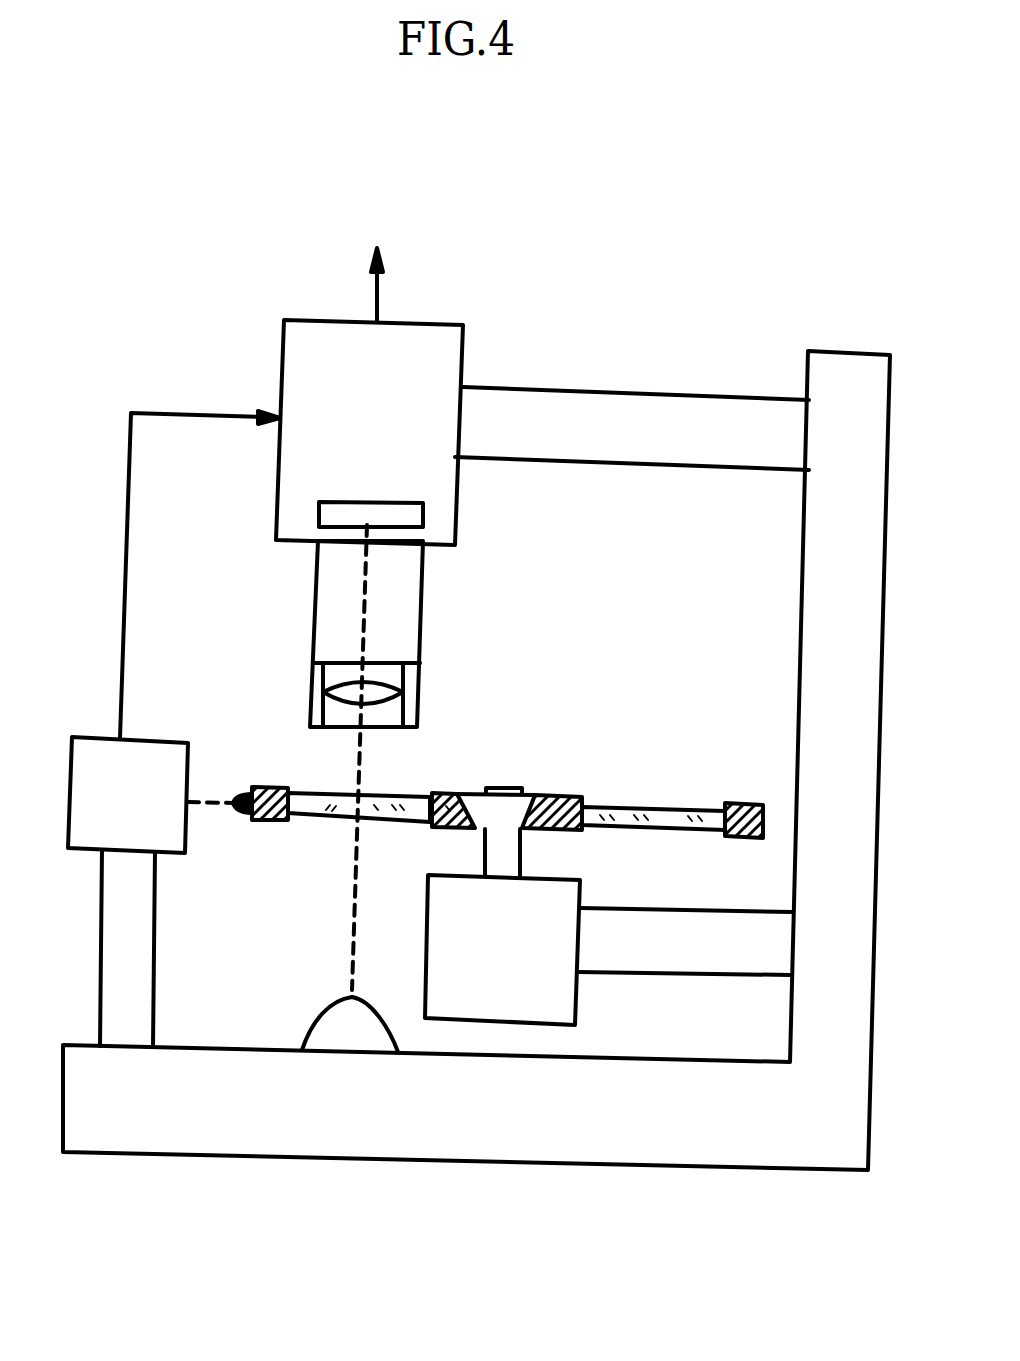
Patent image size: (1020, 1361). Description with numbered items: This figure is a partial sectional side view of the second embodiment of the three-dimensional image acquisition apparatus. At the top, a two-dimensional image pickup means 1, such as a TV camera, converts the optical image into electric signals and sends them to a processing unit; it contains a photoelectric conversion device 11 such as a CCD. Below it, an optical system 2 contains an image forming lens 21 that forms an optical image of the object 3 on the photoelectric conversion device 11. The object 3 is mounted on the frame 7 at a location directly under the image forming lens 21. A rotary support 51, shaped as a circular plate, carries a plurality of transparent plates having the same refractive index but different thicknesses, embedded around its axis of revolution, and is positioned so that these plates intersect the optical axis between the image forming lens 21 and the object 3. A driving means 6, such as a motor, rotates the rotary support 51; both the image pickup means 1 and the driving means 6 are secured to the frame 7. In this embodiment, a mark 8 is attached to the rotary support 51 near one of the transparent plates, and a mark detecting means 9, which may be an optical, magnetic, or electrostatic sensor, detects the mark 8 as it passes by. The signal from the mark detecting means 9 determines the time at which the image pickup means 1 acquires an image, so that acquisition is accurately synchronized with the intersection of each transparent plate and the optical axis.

The two-dimensional image pickup means 1 is at (475, 364).
The photoelectric conversion device 11 is at (320, 512).
The optical system 2 is at (432, 595).
The image forming lens 21 is at (385, 700).
The object 3 is at (330, 1028).
The rotary support 51 is at (472, 803).
The driving means 6 is at (553, 1008).
The frame 7 is at (665, 1137).
The mark 8 is at (238, 815).
The mark detecting means 9 is at (135, 758).